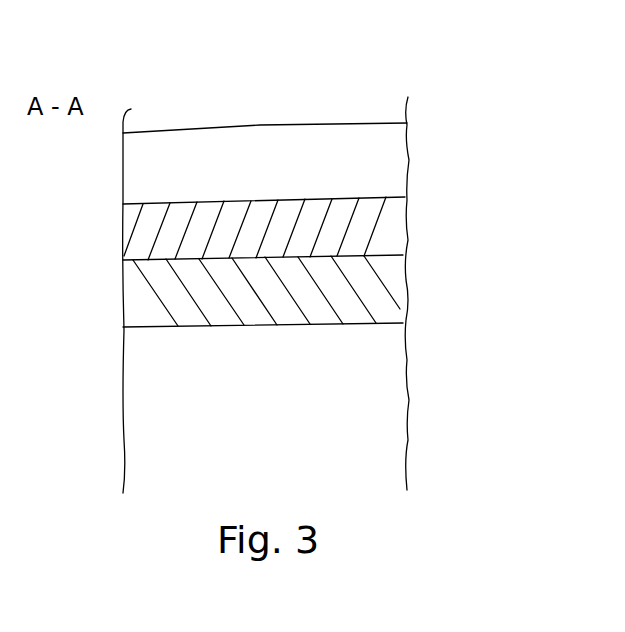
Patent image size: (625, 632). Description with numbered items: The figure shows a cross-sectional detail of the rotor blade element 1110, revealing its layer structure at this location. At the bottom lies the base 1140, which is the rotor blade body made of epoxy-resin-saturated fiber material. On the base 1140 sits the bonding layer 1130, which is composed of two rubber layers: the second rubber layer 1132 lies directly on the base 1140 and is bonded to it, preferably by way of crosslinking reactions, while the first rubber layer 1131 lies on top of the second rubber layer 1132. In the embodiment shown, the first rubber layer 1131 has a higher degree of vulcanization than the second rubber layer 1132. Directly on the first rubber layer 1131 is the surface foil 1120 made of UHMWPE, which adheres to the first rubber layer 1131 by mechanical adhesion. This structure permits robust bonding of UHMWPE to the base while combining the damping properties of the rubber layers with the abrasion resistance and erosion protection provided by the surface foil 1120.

The rotor blade element 1110 is at (421, 61).
The surface foil 1120 is at (395, 149).
The bonding layer 1130 is at (261, 262).
The first rubber layer 1131 is at (397, 215).
The second rubber layer 1132 is at (389, 297).
The base 1140 is at (388, 381).